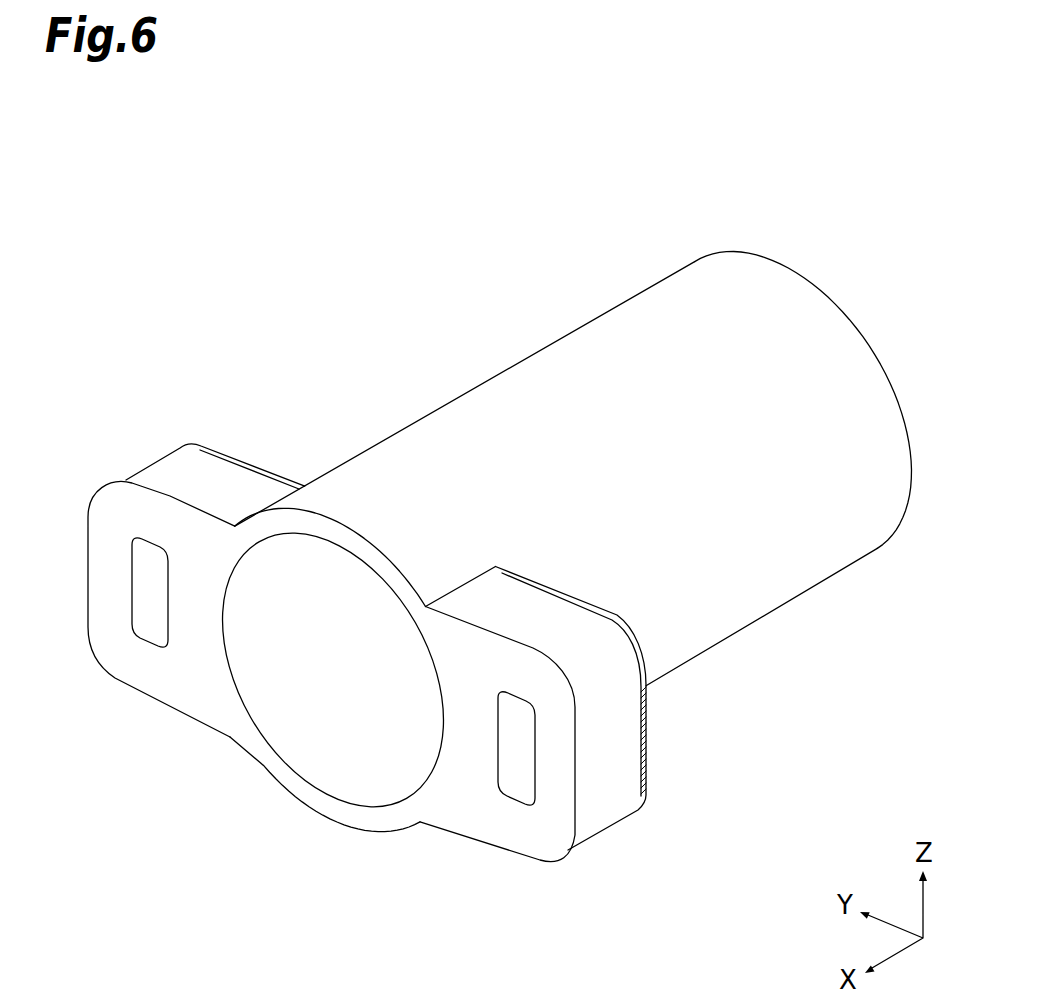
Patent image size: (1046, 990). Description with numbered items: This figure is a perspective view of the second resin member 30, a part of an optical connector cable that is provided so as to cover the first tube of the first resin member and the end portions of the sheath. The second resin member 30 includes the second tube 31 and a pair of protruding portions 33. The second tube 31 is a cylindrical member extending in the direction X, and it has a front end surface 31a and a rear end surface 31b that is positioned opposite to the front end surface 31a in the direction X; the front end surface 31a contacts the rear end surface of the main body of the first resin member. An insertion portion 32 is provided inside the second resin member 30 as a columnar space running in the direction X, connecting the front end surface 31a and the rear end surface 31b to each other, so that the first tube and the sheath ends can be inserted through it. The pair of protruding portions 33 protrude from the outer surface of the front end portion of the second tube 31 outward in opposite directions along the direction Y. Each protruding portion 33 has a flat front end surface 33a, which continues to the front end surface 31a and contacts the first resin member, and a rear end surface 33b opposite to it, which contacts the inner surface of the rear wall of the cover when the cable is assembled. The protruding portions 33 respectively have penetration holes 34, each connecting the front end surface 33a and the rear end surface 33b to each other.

The second resin member 30 is at (306, 271).
The second tube 31 is at (581, 550).
The front end surface 31a is at (265, 761).
The rear end surface 31b is at (865, 328).
The insertion portion 32 is at (357, 768).
The protruding portions 33 is at (404, 666).
The front end surface 33a is at (153, 685).
The rear end surface 33b is at (233, 455).
The penetration holes 34 is at (150, 637).